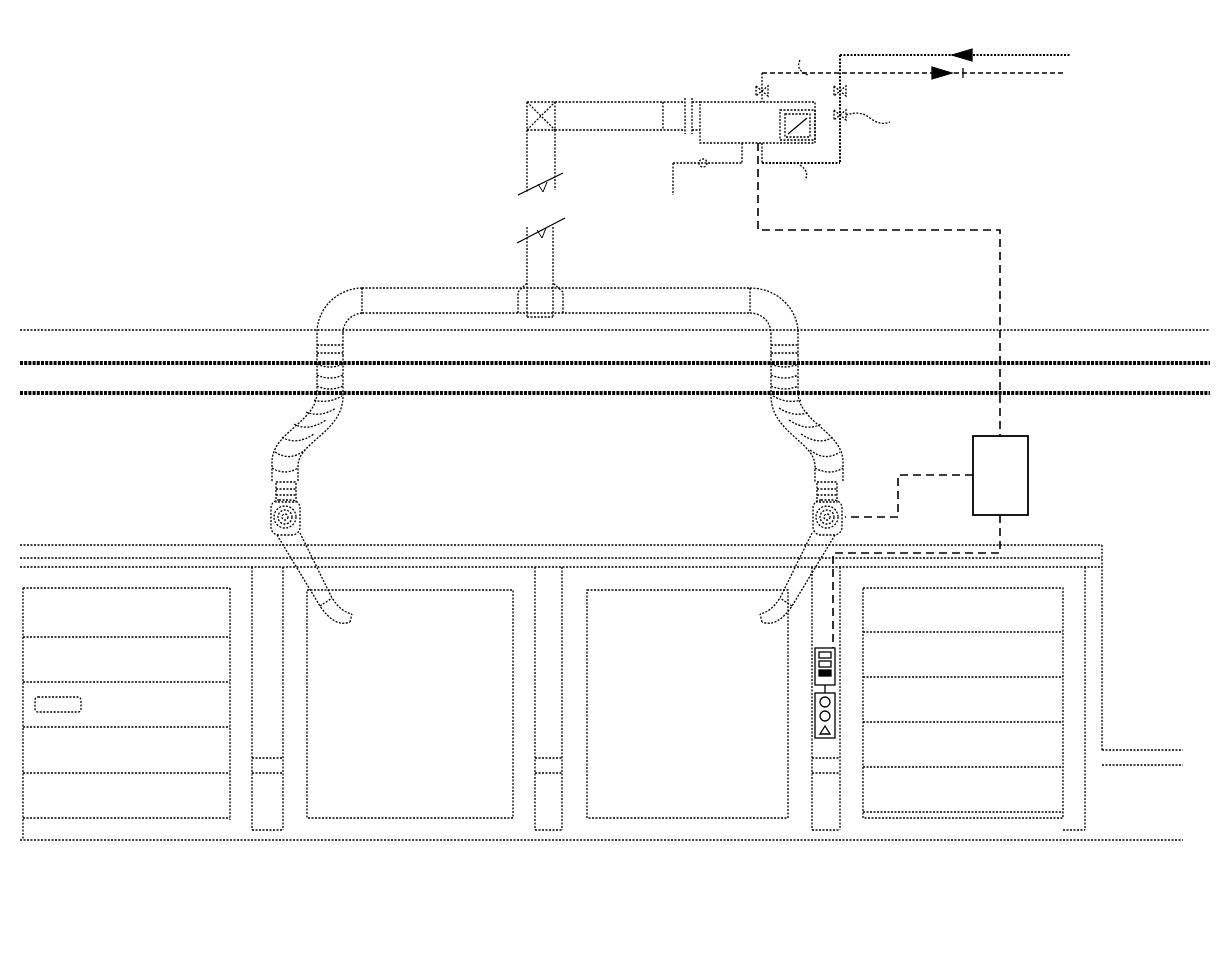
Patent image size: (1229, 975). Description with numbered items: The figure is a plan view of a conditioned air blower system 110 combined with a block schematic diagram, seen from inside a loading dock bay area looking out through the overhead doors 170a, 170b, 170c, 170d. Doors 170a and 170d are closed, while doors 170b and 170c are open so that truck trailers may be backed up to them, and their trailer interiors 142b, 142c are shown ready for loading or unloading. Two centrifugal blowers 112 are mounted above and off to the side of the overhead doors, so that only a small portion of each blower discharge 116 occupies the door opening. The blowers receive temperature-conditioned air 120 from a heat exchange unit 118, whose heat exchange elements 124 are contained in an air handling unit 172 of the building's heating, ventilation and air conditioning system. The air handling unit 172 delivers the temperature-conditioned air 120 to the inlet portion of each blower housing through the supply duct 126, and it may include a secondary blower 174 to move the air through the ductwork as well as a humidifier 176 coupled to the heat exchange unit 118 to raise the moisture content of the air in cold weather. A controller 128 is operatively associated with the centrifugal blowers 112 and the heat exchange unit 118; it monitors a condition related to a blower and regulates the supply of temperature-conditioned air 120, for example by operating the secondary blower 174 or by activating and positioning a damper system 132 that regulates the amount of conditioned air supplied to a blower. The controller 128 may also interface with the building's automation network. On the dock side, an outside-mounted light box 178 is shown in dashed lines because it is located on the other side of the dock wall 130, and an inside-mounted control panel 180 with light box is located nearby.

The conditioned air blower system 110 is at (269, 65).
The centrifugal blower 112 is at (298, 517).
The blower discharge 116 is at (305, 550).
The heat exchange unit 118 is at (757, 122).
The temperature-conditioned air 120 is at (490, 275).
The heat exchange elements 124 is at (963, 78).
The supply duct 126 is at (270, 465).
The controller 128 is at (1020, 487).
The dock wall 130 is at (558, 478).
The damper system 132 is at (822, 492).
The trailer interior 142b is at (432, 704).
The trailer interior 142c is at (708, 704).
The overhead door 170a is at (158, 666).
The overhead door 170b is at (446, 586).
The overhead door 170c is at (705, 586).
The overhead door 170d is at (1003, 616).
The air handling unit 172 is at (747, 101).
The secondary blower 174 is at (686, 128).
The humidifier 176 is at (757, 122).
The outside-mounted light box 178 is at (814, 725).
The inside-mounted control panel 180 is at (814, 678).